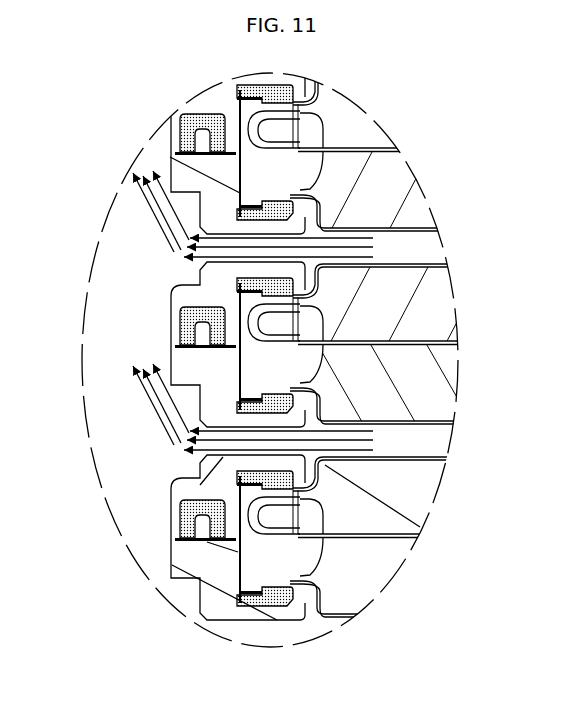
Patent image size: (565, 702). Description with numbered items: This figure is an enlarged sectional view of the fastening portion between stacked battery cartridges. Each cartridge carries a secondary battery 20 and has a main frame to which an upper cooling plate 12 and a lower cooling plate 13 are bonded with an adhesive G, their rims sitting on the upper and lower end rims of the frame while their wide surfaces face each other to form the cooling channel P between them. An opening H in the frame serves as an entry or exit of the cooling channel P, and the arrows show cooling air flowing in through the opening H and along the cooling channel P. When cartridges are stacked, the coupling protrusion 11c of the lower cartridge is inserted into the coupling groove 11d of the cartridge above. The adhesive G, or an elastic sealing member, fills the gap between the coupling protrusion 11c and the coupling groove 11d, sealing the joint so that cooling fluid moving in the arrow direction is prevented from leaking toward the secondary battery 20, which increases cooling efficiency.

The coupling protrusion 11c is at (203, 326).
The coupling groove 11d is at (197, 487).
The upper cooling plate 12 is at (432, 229).
The lower cooling plate 13 is at (432, 265).
The secondary battery 20 is at (450, 365).
The cooling channel P is at (414, 239).
The opening H is at (170, 268).
The adhesive G is at (190, 540).